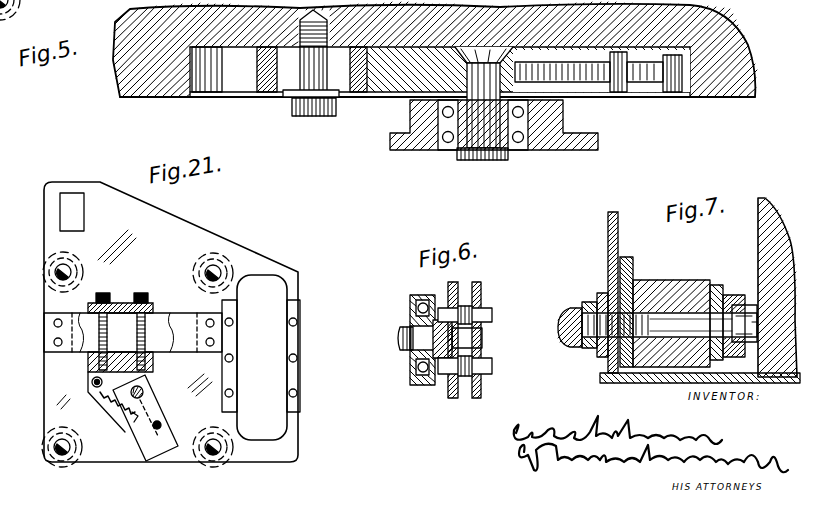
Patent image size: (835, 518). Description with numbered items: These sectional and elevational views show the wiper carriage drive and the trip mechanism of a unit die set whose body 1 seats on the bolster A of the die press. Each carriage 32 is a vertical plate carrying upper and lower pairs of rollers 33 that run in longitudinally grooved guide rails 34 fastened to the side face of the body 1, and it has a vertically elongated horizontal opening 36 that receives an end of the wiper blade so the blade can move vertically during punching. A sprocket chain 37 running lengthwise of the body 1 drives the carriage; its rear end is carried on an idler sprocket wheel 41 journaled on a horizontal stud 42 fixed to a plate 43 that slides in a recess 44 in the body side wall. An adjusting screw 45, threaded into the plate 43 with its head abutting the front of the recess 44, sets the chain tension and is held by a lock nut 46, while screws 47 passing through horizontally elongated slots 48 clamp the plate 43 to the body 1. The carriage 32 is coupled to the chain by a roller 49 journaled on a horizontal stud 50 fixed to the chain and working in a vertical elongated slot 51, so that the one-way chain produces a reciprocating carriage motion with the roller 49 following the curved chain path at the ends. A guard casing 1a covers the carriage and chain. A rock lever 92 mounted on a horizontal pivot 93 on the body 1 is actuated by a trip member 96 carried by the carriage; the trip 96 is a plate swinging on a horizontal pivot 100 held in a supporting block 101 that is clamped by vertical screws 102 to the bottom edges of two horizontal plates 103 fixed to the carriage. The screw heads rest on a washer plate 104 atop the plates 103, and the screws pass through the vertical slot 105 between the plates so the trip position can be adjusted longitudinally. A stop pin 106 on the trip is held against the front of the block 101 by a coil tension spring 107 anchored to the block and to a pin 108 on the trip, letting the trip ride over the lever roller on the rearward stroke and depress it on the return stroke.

In FIG. 5, the body 1 is at (746, 71).
In FIG. 7, the body 1 is at (778, 218).
In FIG. 7, the guard casing 1a is at (607, 236).
In FIG. 21, the carriage member 32 is at (256, 265).
In FIG. 21, the roller 33 is at (48, 278).
In FIG. 7, the guide rail 34 is at (727, 298).
In FIG. 21, the horizontal opening 36 is at (62, 209).
In FIG. 6, the sprocket chain 37 is at (481, 294).
In FIG. 5, the idler sprocket wheel 41 is at (407, 140).
In FIG. 5, the horizontal stud 42 is at (492, 150).
In FIG. 5, the plate 43 is at (388, 88).
In FIG. 5, the recess 44 is at (258, 89).
In FIG. 5, the adjusting screw 45 is at (650, 90).
In FIG. 5, the lock nut 46 is at (622, 92).
In FIG. 5, the screw 47 is at (320, 118).
In FIG. 5, the horizontally elongated slot 48 is at (298, 92).
In FIG. 6, the roller 49 is at (425, 388).
In FIG. 6, the horizontal stud 50 is at (455, 343).
In FIG. 21, the vertical elongated slot 51 is at (290, 336).
In FIG. 7, the rock lever 92 is at (632, 266).
In FIG. 7, the horizontal pivot 93 is at (668, 312).
In FIG. 21, the trip member 96 is at (165, 448).
In FIG. 21, the horizontal pivot 100 is at (148, 388).
In FIG. 21, the supporting block 101 is at (155, 362).
In FIG. 21, the vertical screw 102 is at (140, 293).
In FIG. 21, the horizontal plate 103 is at (186, 330).
In FIG. 21, the washer plate 104 is at (160, 312).
In FIG. 21, the vertical slot 105 is at (83, 328).
In FIG. 21, the stop pin 106 is at (164, 424).
In FIG. 21, the coil tension spring 107 is at (115, 407).
In FIG. 21, the pin 108 is at (136, 420).
In FIG. 7, the bolster A is at (604, 380).